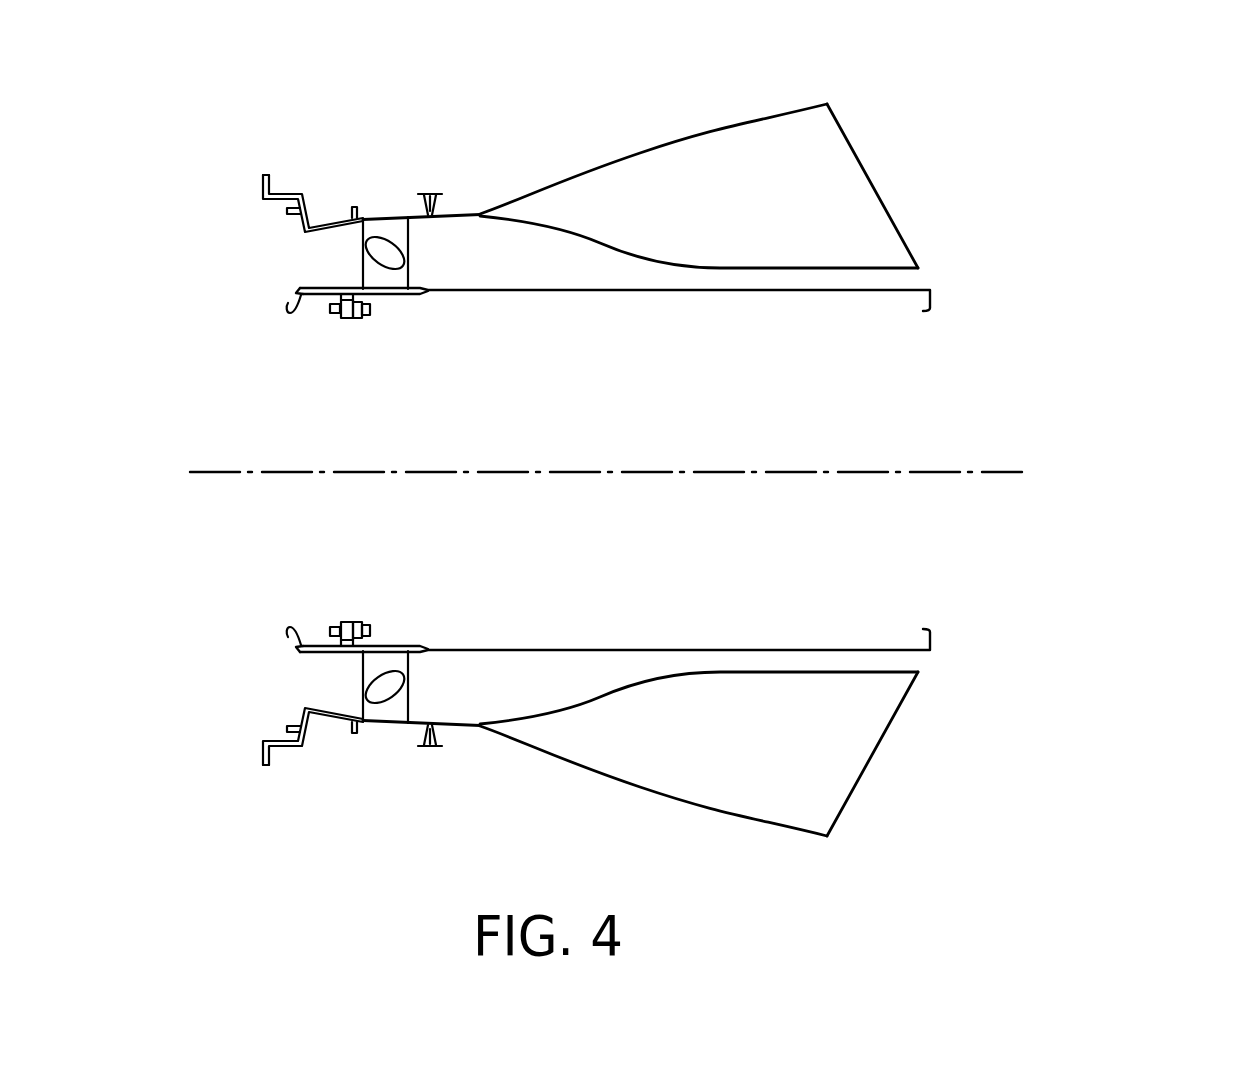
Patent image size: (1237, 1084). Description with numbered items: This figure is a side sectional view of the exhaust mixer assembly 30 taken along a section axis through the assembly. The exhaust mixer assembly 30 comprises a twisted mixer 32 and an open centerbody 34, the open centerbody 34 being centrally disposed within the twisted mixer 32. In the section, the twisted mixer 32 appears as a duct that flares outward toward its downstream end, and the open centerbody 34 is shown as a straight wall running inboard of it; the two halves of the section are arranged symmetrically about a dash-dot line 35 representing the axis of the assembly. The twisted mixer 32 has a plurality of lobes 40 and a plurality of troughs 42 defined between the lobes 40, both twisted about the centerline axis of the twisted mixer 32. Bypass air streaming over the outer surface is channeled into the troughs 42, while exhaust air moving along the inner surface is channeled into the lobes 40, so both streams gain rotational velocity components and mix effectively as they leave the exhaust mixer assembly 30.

The exhaust mixer assembly 30 is at (1043, 688).
The twisted mixer 32 is at (862, 156).
The open centerbody 34 is at (858, 292).
The engine centerline 35 is at (652, 474).
The lobes 40 is at (700, 136).
The troughs 42 is at (806, 266).